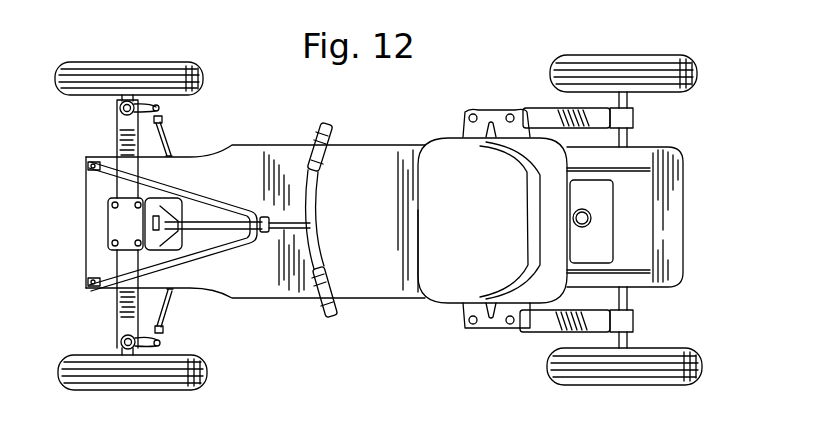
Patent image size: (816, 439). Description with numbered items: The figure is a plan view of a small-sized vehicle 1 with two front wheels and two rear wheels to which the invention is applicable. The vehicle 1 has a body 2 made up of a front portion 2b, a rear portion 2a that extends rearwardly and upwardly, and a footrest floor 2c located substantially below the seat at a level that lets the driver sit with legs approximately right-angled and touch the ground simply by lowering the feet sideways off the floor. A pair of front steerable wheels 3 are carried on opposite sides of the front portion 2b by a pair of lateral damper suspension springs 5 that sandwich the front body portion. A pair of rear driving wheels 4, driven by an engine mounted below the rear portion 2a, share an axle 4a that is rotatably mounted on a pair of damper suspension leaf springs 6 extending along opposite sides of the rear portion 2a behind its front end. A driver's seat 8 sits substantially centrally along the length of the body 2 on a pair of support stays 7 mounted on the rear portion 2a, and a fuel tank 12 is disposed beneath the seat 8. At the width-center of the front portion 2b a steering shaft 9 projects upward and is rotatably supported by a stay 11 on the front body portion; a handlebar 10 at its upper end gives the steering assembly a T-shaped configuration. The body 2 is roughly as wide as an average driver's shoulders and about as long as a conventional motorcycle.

The small-sized vehicle 1 is at (409, 311).
The body 2 is at (366, 279).
The rear portion 2a is at (668, 192).
The front portion 2b is at (97, 262).
The footrest floor 2c is at (284, 285).
The front steerable wheels 3 is at (203, 78).
The rear driving wheels 4 is at (690, 88).
The axle 4a is at (622, 133).
The lateral damper suspension springs 5 is at (122, 131).
The damper suspension leaf springs 6 is at (535, 118).
The support stays 7 is at (650, 167).
The driver's seat 8 is at (458, 175).
The steering shaft 9 is at (223, 226).
The handlebar 10 is at (318, 177).
The stay 11 is at (192, 195).
The fuel tank 12 is at (598, 233).